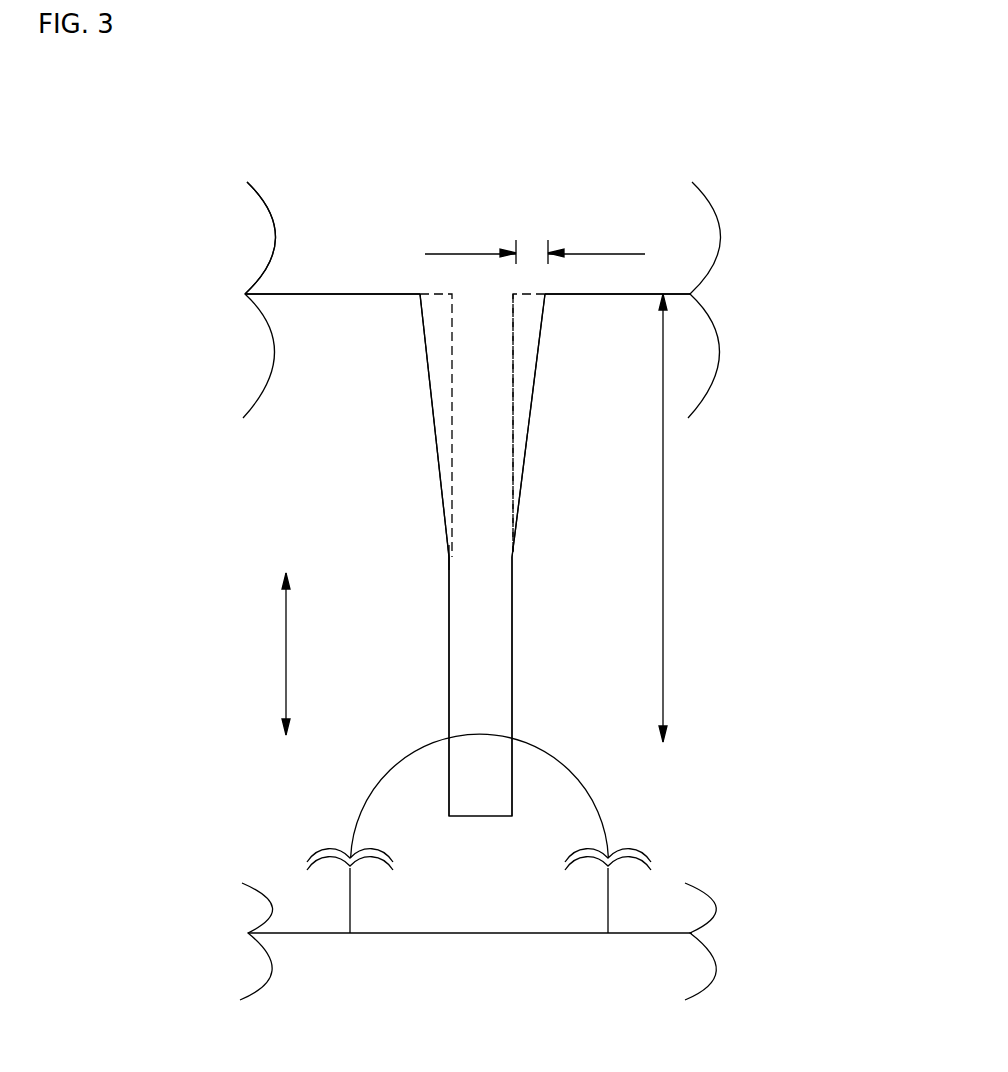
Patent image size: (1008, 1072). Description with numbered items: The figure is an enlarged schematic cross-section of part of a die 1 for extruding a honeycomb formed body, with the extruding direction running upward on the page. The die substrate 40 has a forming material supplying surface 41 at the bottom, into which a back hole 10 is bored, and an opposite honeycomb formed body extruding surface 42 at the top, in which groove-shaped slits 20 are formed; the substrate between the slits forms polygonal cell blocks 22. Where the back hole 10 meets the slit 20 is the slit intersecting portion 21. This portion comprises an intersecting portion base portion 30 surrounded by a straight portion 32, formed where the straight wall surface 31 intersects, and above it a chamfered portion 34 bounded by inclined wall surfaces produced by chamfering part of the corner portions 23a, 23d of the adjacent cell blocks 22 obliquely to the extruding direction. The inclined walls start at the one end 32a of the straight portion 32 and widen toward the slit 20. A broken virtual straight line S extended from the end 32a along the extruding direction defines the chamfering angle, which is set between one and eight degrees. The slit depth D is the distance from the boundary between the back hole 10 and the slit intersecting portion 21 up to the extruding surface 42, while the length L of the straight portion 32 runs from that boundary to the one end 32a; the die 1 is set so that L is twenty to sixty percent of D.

The die 1 is at (718, 86).
The die substrate 40 is at (593, 108).
The forming material supplying surface 41 is at (598, 953).
The honeycomb formed body extruding surface 42 is at (303, 293).
The polygonal cell block 22 is at (346, 305).
The slit 20 is at (424, 300).
The slit intersecting portion 21 is at (490, 305).
The corner portion 23d is at (434, 406).
The corner portion 23a is at (523, 482).
The one end of the straight portion 32a is at (449, 577).
The chamfered portion 34 is at (557, 482).
The intersecting portion base portion 30 is at (484, 636).
The straight portion 32 is at (563, 692).
The straight wall surface 31 is at (508, 684).
The back hole 10 is at (503, 771).
The virtual straight line S is at (515, 360).
The slit depth D is at (664, 497).
The length of the straight portion L is at (285, 634).